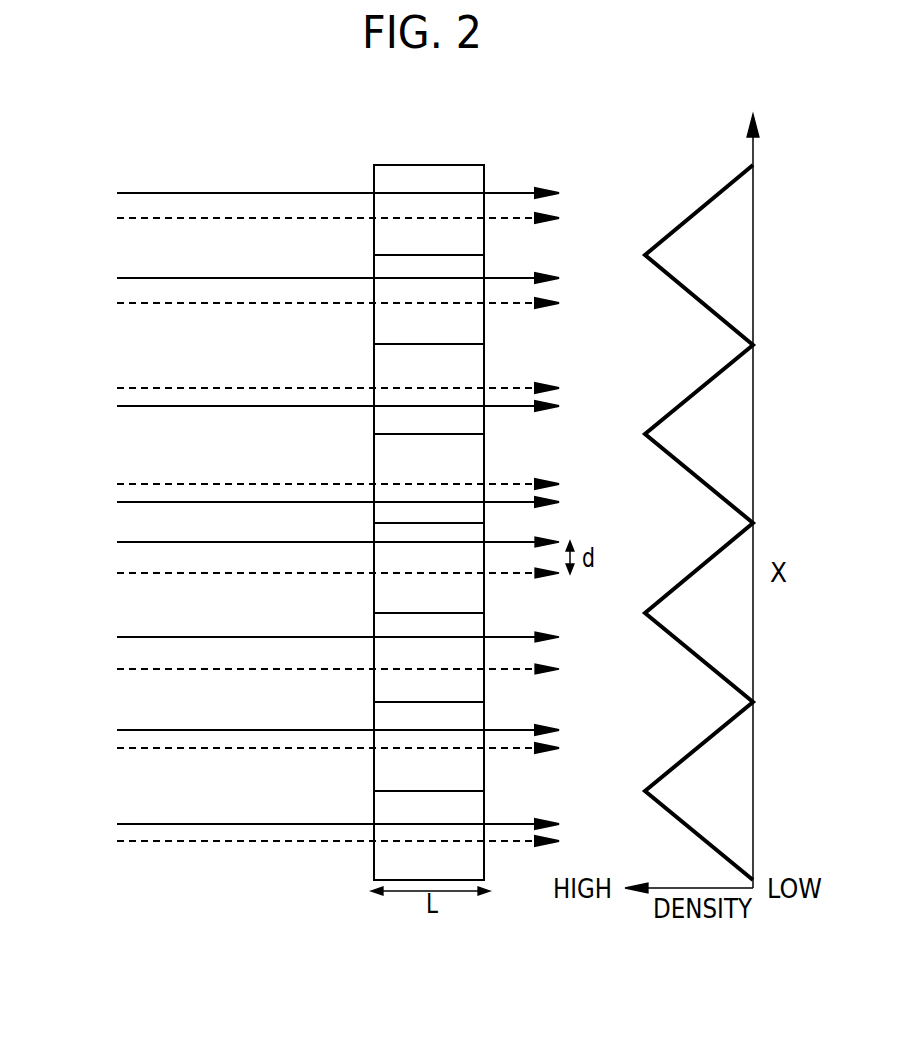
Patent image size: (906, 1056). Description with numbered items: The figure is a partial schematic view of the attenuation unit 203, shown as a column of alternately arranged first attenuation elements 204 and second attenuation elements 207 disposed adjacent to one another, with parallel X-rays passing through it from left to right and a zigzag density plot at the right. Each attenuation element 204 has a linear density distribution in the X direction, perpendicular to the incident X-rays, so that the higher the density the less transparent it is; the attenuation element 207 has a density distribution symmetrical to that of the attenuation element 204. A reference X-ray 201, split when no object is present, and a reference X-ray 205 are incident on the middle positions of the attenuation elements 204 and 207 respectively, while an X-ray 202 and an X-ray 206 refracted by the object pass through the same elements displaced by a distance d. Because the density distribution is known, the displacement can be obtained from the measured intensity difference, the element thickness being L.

The reference X-ray 201 is at (147, 573).
The X-ray 202 is at (145, 542).
The attenuation unit 203 is at (374, 186).
The attenuation element 204 is at (385, 601).
The reference X-ray 205 is at (170, 669).
The X-ray 206 is at (138, 637).
The attenuation element 207 is at (378, 695).